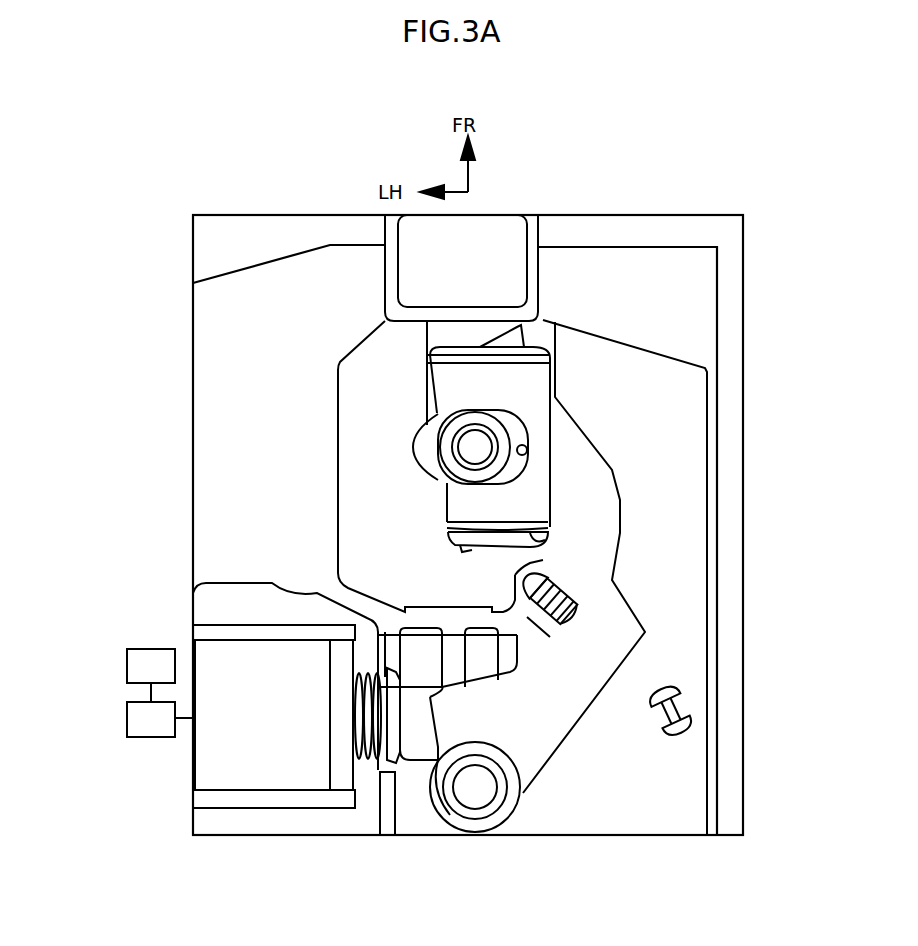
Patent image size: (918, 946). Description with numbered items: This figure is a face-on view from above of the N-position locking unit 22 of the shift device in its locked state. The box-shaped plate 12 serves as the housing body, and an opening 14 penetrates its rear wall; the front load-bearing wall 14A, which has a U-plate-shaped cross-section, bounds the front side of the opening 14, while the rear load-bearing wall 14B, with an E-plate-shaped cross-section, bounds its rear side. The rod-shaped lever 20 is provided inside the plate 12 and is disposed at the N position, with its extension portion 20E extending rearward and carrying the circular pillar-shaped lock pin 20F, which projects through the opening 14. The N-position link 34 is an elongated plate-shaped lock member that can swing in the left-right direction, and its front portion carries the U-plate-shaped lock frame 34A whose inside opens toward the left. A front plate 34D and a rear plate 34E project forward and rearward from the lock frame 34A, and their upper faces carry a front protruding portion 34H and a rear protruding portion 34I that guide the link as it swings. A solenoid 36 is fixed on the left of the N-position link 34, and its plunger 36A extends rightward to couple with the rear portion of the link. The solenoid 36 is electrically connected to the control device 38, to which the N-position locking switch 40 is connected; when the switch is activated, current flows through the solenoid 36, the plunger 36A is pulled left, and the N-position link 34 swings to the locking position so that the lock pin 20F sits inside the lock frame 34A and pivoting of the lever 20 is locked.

The plate 12 is at (212, 318).
The opening 14 is at (340, 560).
The front load-bearing wall 14A is at (385, 284).
The rear load-bearing wall 14B is at (513, 610).
The lever 20 is at (413, 443).
The extension portion 20E is at (427, 378).
The lock pin 20F is at (450, 452).
The N-position locking unit 22 is at (350, 822).
The N-position link 34 is at (620, 547).
The lock frame 34A is at (520, 455).
The front plate 34D is at (522, 346).
The rear plate 34E is at (464, 550).
The front protruding portion 34H is at (523, 363).
The rear protruding portion 34I is at (532, 538).
The solenoid 36 is at (240, 808).
The plunger 36A is at (422, 745).
The control device 38 is at (127, 719).
The N-position locking switch 40 is at (151, 649).
The N position N is at (427, 351).